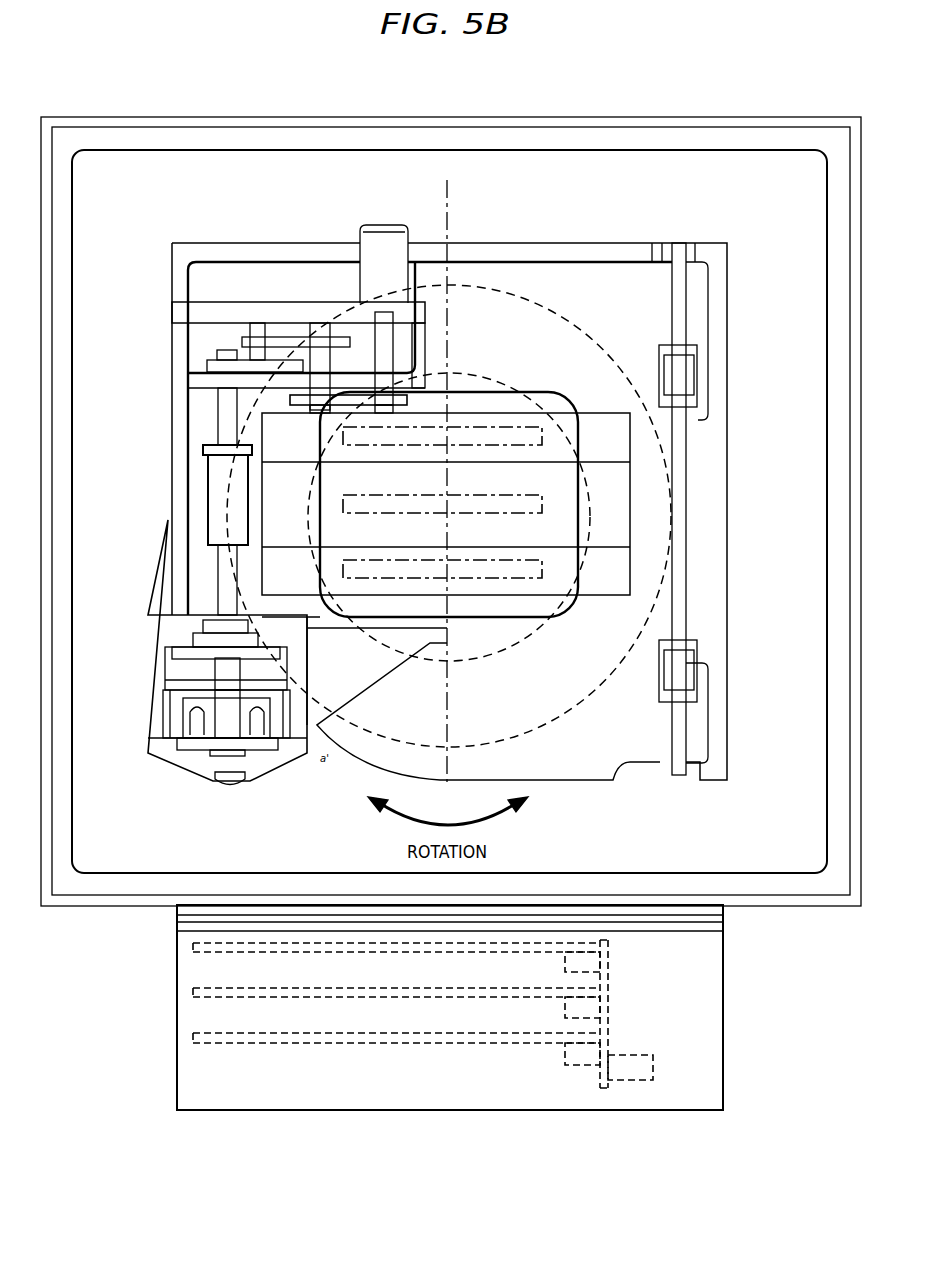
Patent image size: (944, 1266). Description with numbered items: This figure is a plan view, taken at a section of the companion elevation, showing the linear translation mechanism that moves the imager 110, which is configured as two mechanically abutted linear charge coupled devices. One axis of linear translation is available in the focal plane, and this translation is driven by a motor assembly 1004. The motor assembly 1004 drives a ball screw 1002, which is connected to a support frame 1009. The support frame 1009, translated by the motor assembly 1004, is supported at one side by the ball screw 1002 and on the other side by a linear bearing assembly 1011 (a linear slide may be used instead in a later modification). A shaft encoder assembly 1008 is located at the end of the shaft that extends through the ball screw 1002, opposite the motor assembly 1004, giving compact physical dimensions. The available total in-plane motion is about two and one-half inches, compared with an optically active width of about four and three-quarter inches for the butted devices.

The shaft encoder assembly 1008 is at (225, 340).
The linear bearing assembly 1011 is at (672, 305).
The ball screw 1002 is at (207, 502).
The support frame 1009 is at (633, 535).
The motor assembly 1004 is at (185, 773).
The imager 110 is at (343, 436).